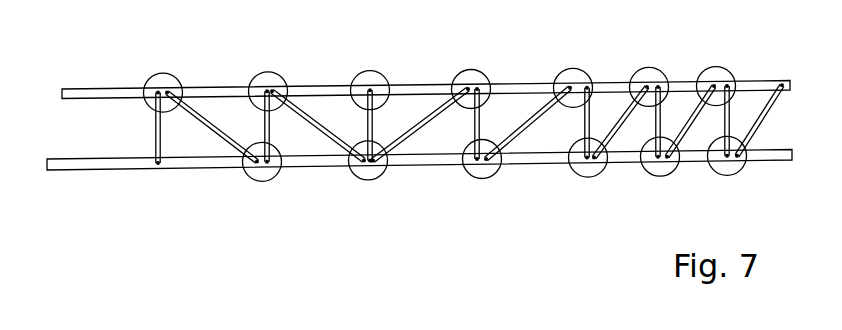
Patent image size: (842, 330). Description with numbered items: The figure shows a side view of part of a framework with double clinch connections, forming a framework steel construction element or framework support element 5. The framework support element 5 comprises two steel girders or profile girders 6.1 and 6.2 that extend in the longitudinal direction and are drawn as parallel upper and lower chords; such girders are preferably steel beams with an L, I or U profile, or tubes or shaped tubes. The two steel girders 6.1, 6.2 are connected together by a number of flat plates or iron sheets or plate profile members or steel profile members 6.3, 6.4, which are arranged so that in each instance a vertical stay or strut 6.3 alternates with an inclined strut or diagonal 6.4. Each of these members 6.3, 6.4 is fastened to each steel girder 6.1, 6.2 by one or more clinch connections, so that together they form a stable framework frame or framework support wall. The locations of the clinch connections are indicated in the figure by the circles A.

The framework support element 5 is at (419, 105).
The steel girder 6.1 is at (771, 82).
The steel girder 6.2 is at (774, 160).
The vertical strut 6.3 is at (268, 130).
The diagonal strut 6.4 is at (206, 128).
The circle indicating clinch connections A is at (164, 78).